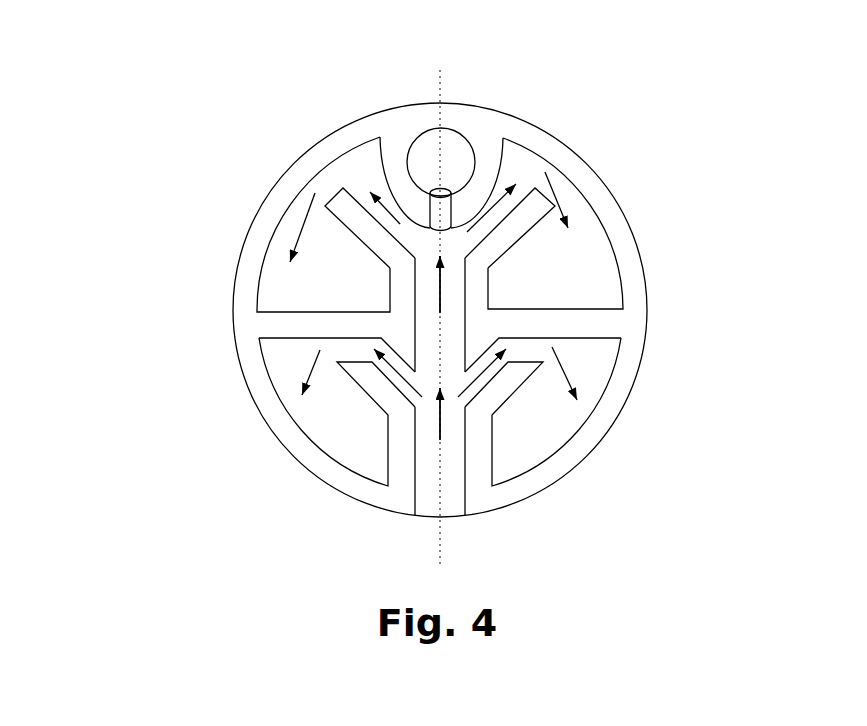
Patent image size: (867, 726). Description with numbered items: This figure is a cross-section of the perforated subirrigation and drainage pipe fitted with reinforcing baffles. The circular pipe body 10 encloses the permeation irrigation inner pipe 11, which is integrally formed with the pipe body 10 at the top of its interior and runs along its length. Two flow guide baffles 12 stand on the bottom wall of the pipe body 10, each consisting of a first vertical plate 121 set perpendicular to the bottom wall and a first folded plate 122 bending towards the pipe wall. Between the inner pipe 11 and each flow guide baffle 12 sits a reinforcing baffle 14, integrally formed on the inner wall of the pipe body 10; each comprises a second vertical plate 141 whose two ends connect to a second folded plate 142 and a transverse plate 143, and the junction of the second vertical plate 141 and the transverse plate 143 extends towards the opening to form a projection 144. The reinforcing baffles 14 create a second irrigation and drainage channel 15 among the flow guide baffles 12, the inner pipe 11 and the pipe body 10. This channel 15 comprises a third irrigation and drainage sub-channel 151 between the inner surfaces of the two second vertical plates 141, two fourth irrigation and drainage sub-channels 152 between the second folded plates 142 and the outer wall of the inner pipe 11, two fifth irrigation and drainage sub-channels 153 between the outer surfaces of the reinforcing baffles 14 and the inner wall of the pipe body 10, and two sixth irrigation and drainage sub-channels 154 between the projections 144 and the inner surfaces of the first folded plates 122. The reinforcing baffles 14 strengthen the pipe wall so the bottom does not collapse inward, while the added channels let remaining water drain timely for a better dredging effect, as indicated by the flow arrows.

The pipe body 10 is at (292, 168).
The permeation irrigation inner pipe 11 is at (483, 150).
The flow guide baffle 12 is at (706, 565).
The first vertical plate 121 is at (480, 462).
The first folded plate 122 is at (517, 388).
The reinforcing baffle 14 is at (178, 480).
The second vertical plate 141 is at (390, 292).
The second folded plate 142 is at (300, 219).
The transverse plate 143 is at (321, 322).
The projection 144 is at (352, 397).
The second irrigation and drainage channel 15 is at (570, 265).
The third irrigation and drainage sub-channel 151 is at (453, 295).
The fourth irrigation and drainage sub-channel 152 is at (373, 183).
The fifth irrigation and drainage sub-channel 153 is at (573, 204).
The sixth irrigation and drainage sub-channel 154 is at (412, 390).